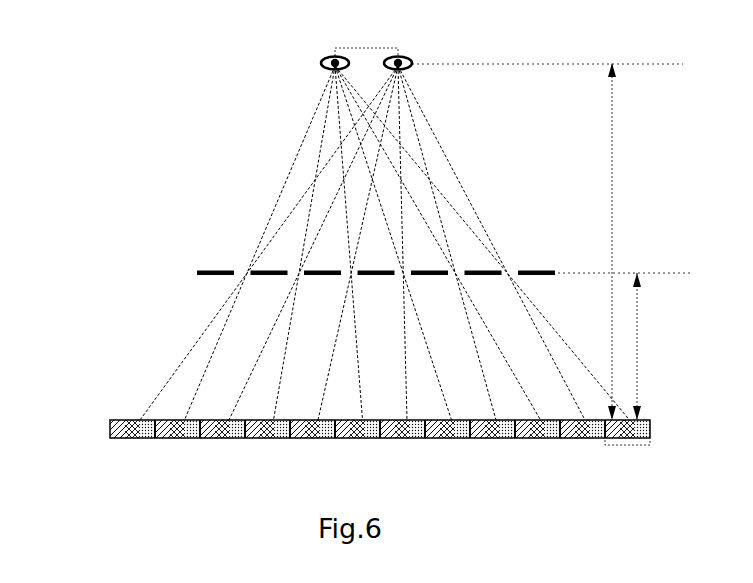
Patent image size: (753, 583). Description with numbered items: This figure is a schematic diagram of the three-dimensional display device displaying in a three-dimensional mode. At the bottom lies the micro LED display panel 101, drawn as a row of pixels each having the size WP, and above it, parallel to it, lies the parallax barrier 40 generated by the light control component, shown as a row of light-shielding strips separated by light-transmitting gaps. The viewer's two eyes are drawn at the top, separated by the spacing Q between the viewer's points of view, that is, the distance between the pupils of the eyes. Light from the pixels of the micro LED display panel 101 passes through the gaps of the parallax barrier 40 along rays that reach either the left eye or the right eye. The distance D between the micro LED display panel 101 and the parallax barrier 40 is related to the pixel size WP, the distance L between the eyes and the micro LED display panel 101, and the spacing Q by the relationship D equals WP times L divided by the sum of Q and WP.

The parallax barrier 40 is at (197, 271).
The micro LED display panel 101 is at (109, 423).
The spacing between points of view Q is at (366, 48).
The distance between eyes and display panel L is at (612, 241).
The distance between display panel and parallax barrier D is at (637, 346).
The size of a pixel WP is at (627, 445).